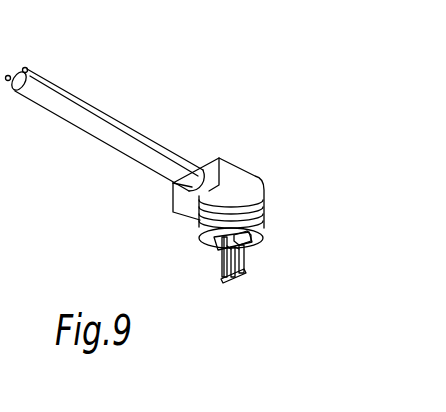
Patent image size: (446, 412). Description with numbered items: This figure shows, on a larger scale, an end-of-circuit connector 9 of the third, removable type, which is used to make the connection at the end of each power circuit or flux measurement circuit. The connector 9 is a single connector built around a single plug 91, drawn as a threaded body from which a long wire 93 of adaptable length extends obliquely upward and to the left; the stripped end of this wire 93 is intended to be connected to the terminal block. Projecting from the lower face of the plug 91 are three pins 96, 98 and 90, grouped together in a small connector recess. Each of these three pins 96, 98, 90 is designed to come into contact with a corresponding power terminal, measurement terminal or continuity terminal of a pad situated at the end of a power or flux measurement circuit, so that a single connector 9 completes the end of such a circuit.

The removable connector 9 is at (232, 136).
The wire 93 is at (15, 72).
The plug 91 is at (265, 233).
The pin 98 is at (222, 243).
The pin 96 is at (227, 278).
The pin 90 is at (248, 272).